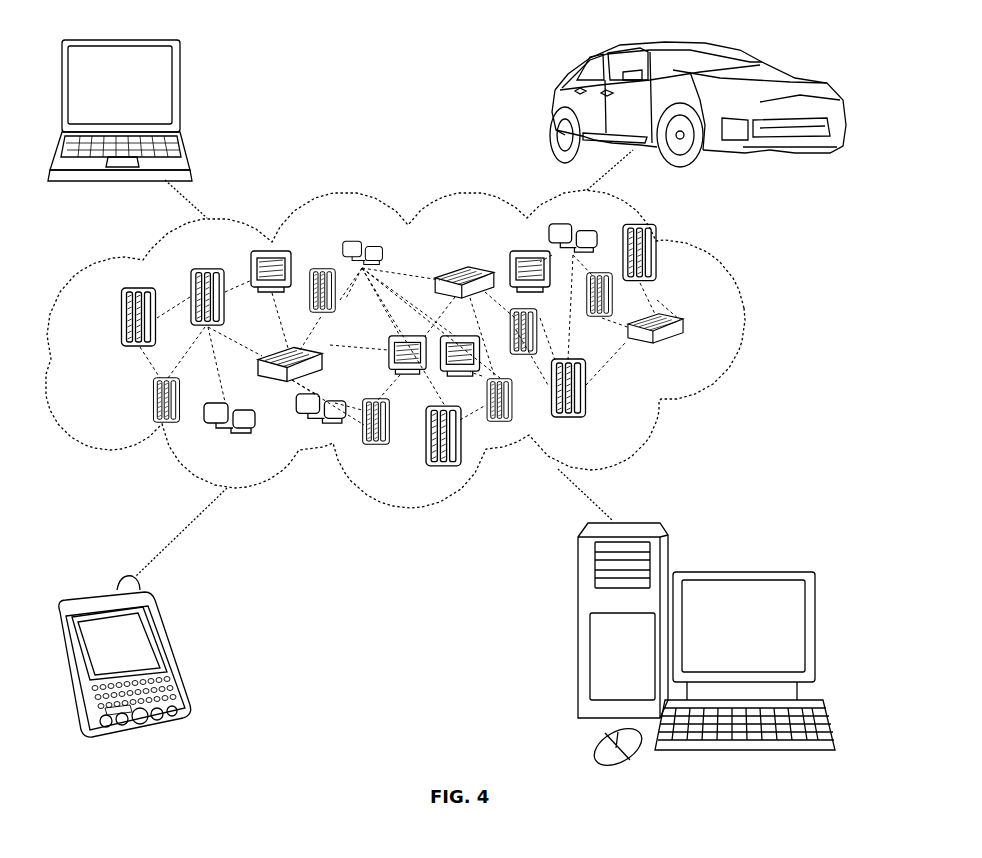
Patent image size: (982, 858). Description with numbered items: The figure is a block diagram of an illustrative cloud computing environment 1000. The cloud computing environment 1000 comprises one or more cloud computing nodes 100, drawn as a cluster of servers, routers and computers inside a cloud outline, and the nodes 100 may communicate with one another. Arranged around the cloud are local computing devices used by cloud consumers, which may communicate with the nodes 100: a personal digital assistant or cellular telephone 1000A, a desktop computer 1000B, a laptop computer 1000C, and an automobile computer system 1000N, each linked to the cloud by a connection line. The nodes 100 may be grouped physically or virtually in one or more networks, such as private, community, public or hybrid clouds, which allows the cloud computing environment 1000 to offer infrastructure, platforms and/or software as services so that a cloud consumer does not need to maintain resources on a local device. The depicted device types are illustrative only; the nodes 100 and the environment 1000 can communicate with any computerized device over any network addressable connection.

The cloud computing node 100 is at (690, 349).
The cloud computing environment 1000 is at (428, 349).
The personal digital assistant (PDA) or cellular telephone 1000A is at (173, 652).
The desktop computer 1000B is at (742, 570).
The laptop computer 1000C is at (183, 90).
The automobile computer system 1000N is at (556, 105).